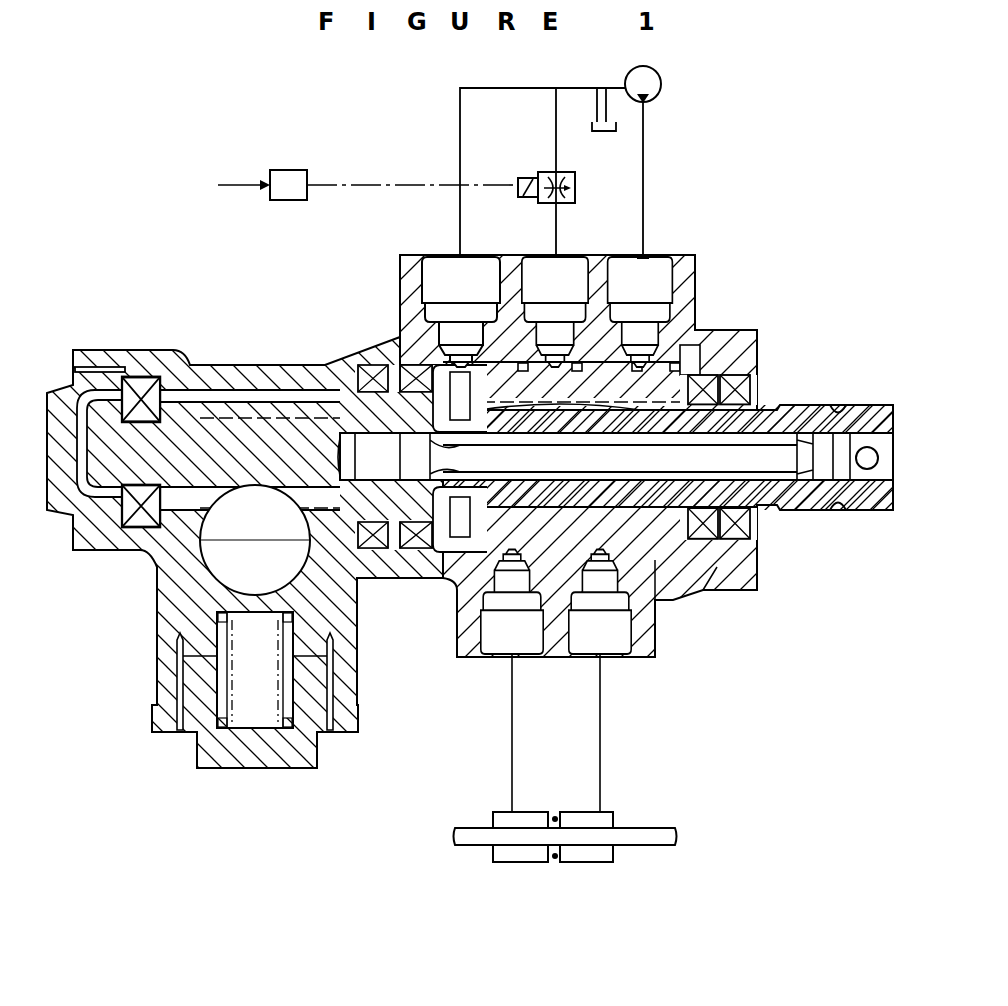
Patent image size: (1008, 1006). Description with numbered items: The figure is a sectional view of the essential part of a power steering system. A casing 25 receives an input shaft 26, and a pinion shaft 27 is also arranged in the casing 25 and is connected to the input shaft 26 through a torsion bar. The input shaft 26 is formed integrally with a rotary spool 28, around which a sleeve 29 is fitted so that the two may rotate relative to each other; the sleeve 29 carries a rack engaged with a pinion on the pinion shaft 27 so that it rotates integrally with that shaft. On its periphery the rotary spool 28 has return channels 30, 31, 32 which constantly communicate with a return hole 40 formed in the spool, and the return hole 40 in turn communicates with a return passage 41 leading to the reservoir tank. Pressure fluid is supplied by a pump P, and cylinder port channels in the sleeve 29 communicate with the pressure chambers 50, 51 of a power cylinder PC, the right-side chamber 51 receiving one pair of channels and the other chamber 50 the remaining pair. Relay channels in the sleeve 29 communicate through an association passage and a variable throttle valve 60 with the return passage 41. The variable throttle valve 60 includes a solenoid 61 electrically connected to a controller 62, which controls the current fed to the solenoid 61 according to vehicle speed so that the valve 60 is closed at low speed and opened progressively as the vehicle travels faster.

The casing 25 is at (697, 257).
The input shaft 26 is at (870, 420).
The pinion shaft 27 is at (393, 548).
The rotary spool 28 is at (667, 547).
The sleeve 29 is at (492, 552).
The return channel 30 is at (590, 432).
The return channel 31 is at (555, 312).
The return channel 32 is at (640, 312).
The return hole 40 is at (753, 550).
The return passage 41 is at (556, 113).
The pressure chamber 50 is at (518, 858).
The pressure chamber 51 is at (592, 858).
The variable throttle valve 60 is at (575, 182).
The solenoid 61 is at (525, 178).
The controller 62 is at (296, 170).
The pump P is at (661, 86).
The power cylinder PC is at (556, 866).